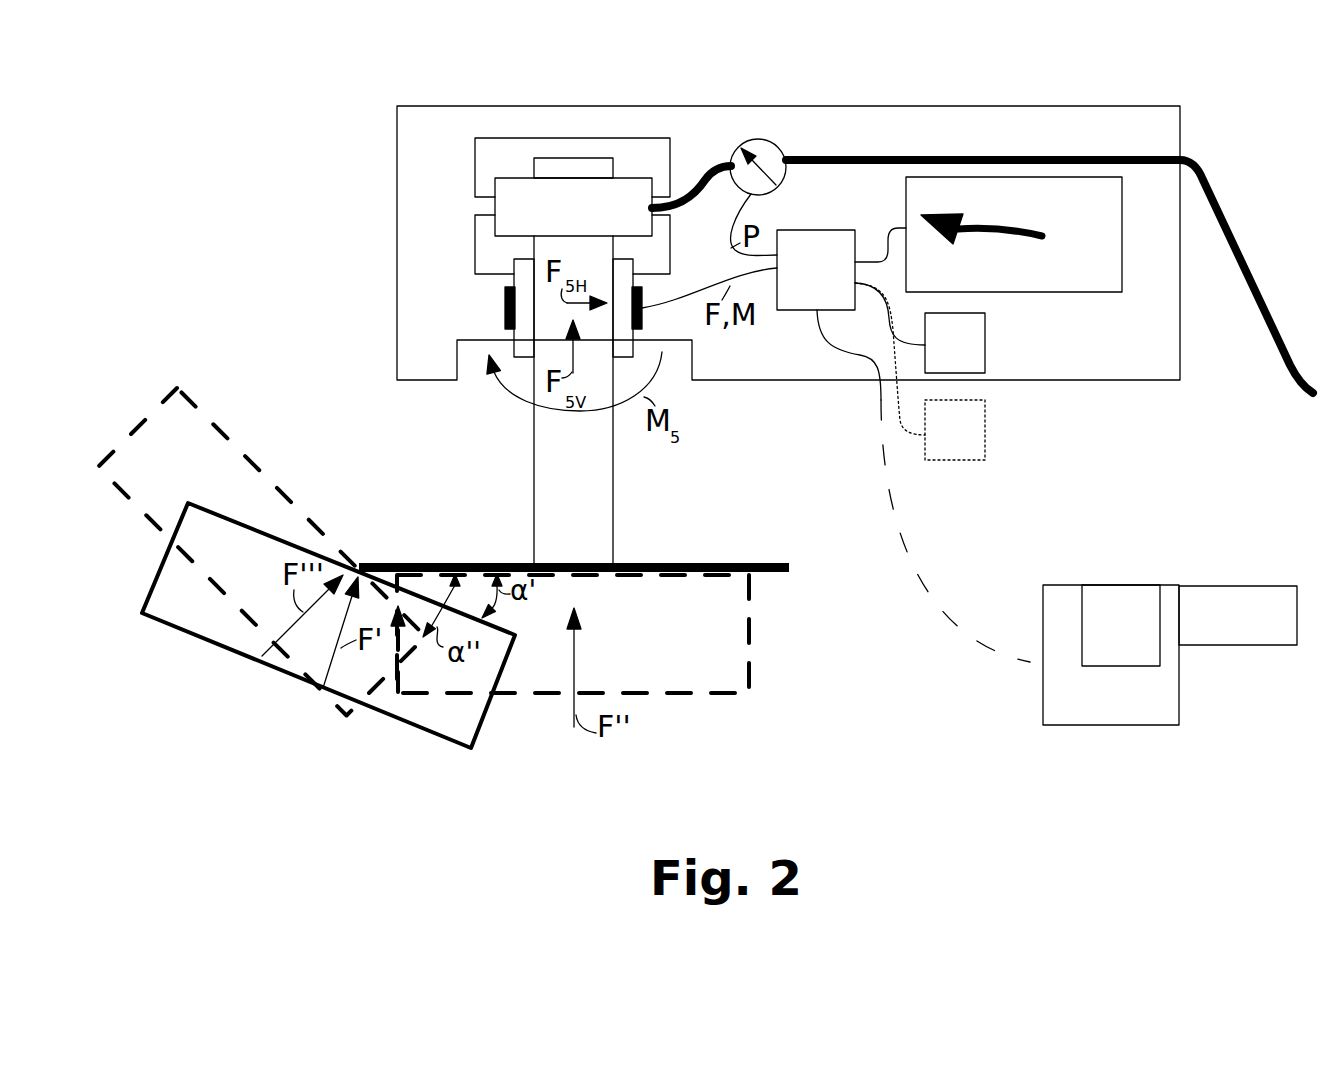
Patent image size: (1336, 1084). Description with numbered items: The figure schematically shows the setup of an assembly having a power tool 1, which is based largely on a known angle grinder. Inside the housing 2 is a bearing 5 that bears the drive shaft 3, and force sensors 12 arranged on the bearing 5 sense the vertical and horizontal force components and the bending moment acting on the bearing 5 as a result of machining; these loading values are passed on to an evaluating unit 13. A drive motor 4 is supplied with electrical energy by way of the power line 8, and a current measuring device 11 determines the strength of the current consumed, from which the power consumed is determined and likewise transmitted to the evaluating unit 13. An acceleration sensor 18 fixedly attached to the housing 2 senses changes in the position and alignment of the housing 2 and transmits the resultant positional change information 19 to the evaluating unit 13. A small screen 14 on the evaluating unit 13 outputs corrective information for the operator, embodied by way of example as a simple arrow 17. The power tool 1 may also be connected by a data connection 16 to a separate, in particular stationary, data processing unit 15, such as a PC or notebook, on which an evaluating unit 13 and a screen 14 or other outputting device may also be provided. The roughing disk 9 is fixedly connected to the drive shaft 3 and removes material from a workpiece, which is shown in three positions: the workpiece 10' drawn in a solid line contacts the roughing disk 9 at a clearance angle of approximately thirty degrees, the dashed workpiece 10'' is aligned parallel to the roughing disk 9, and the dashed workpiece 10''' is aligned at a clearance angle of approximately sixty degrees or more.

The power tool 1 is at (334, 114).
The housing 2 is at (396, 215).
The drive shaft 3 is at (561, 517).
The drive motor 4 is at (564, 226).
The bearing 5 is at (513, 282).
The power line 8 is at (1228, 225).
The roughing disk 9 is at (661, 563).
The workpiece in first position 10' is at (328, 641).
The workpiece in second alignment 10'' is at (571, 659).
The workpiece in third alignment 10''' is at (262, 525).
The current measuring device 11 is at (784, 159).
The force sensors 12 is at (505, 305).
The evaluating unit 13 is at (800, 285).
The screen 14 is at (1093, 292).
The data processing unit 15 is at (1096, 717).
The data connection 16 is at (902, 530).
The arrow 17 is at (1000, 228).
The acceleration sensor 18 is at (939, 357).
The positional change information 19 is at (889, 316).